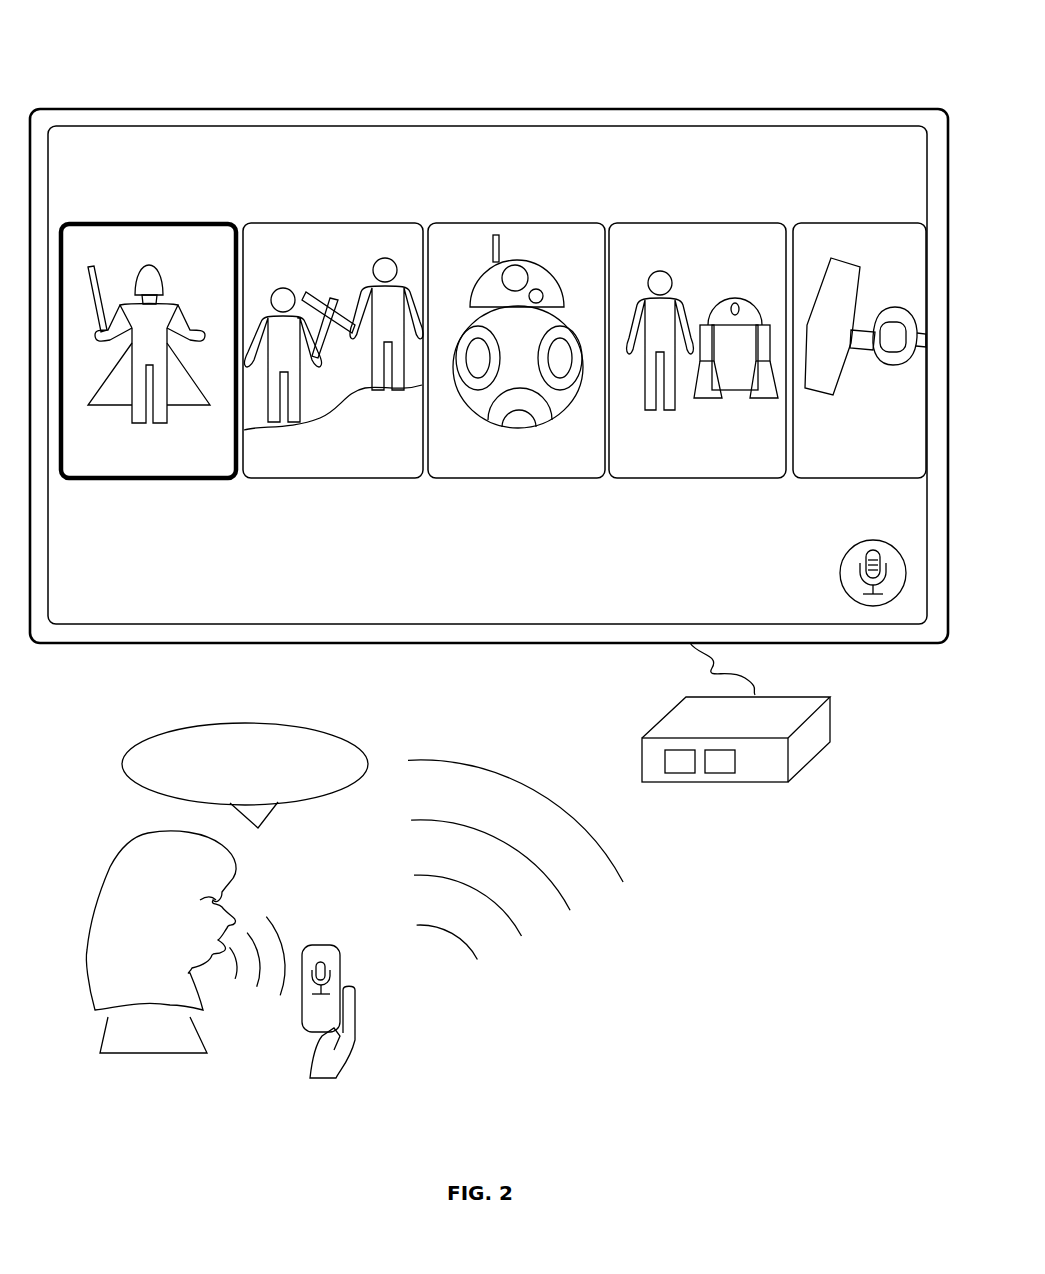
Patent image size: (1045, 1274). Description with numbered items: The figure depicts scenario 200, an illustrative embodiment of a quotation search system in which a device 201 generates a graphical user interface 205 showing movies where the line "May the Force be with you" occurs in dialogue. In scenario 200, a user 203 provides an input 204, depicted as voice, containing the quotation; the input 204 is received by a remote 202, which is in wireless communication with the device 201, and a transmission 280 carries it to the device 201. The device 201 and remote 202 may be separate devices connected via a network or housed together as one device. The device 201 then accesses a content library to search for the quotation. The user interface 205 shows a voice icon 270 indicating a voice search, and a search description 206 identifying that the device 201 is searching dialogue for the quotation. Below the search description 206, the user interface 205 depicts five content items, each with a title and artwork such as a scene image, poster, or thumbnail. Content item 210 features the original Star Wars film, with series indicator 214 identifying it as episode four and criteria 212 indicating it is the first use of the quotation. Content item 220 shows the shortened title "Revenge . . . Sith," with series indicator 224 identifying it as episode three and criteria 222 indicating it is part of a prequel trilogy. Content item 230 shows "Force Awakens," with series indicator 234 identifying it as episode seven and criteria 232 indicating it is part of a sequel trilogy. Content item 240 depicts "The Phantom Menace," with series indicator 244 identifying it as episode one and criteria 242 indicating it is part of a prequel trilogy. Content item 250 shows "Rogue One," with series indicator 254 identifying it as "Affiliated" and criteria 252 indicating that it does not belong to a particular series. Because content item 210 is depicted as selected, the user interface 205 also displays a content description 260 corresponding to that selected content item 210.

The scenario 200 is at (493, 30).
The device 201 is at (774, 776).
The remote 202 is at (340, 972).
The user 203 is at (155, 833).
The input 204 is at (180, 725).
The user interface 205 is at (805, 138).
The search description 206 is at (368, 137).
The content item 210 is at (205, 240).
The criteria 212 is at (229, 500).
The series indicator 214 is at (100, 197).
The content item 220 is at (388, 240).
The criteria 222 is at (400, 500).
The series indicator 224 is at (285, 197).
The content item 230 is at (575, 240).
The criteria 232 is at (583, 500).
The series indicator 234 is at (472, 197).
The content item 240 is at (761, 240).
The criteria 242 is at (768, 500).
The series indicator 244 is at (660, 197).
The content item 250 is at (868, 452).
The criteria 252 is at (878, 500).
The series indicator 254 is at (842, 197).
The content description 260 is at (145, 612).
The voice icon 270 is at (873, 607).
The transmission 280 is at (515, 860).